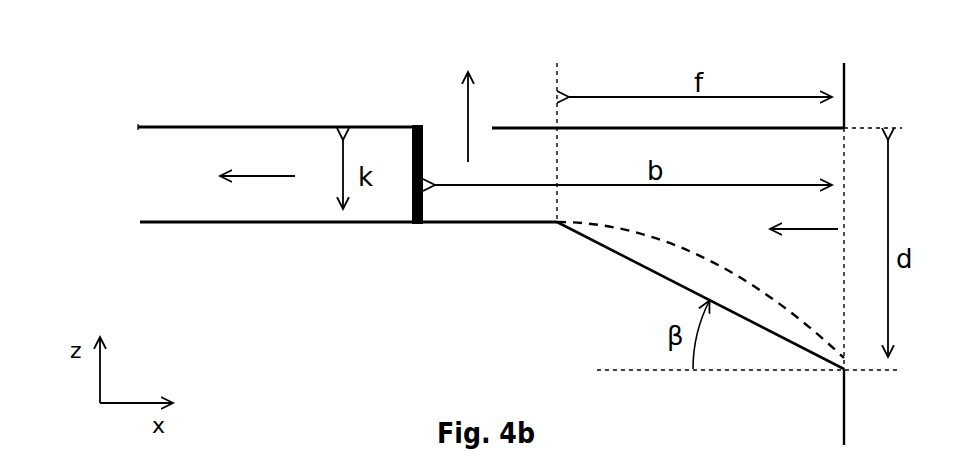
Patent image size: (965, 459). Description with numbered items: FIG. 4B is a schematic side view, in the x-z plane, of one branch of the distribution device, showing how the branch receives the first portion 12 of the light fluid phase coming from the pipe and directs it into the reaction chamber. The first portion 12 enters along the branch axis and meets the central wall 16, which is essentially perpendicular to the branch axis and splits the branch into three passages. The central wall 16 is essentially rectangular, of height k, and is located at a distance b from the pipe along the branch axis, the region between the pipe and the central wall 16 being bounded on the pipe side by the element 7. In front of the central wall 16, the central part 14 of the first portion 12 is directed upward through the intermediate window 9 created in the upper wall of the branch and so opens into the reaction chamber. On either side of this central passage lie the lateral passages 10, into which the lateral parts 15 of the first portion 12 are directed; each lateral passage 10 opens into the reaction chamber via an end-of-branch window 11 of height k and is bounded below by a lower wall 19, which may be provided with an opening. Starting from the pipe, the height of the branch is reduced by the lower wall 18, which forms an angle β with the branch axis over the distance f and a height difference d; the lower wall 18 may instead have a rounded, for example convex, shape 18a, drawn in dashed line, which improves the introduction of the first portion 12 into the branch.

The outer surface / reference wall 7 is at (843, 156).
The intermediate window 9 is at (447, 123).
The lateral passage 10 is at (184, 143).
The end-of-branch window 11 is at (142, 155).
The first portion of the light fluid phase 12 is at (804, 215).
The central part 14 is at (488, 117).
The lateral part 15 is at (257, 162).
The central wall 16 is at (412, 187).
The lower wall 18 is at (663, 282).
The rounded shape 18a is at (647, 240).
The lower wall of the lateral passage 19 is at (225, 227).